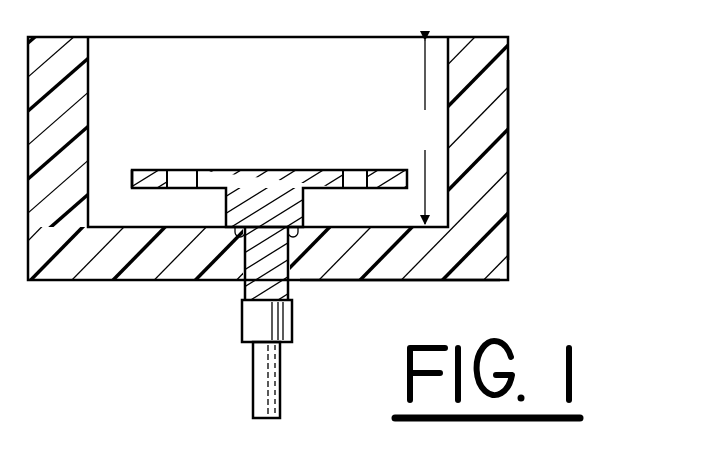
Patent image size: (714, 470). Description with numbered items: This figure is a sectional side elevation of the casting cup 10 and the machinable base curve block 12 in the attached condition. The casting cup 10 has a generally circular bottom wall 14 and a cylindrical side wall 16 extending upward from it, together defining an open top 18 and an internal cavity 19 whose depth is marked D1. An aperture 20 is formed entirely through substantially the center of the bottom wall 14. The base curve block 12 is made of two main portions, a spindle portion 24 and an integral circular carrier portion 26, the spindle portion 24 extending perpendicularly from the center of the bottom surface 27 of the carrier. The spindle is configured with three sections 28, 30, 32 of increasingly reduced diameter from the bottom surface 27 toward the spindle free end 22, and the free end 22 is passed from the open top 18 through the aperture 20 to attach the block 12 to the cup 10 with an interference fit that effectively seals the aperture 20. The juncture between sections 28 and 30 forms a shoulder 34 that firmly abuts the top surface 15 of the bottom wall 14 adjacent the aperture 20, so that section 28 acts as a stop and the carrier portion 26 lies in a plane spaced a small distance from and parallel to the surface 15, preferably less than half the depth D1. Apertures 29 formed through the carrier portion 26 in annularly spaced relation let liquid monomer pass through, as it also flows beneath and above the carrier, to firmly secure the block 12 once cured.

The casting cup 10 is at (498, 127).
The machinable base curve block 12 is at (252, 321).
The bottom wall 14 is at (388, 265).
The top surface of bottom wall 15 is at (349, 221).
The side wall 16 is at (495, 201).
The open top 18 is at (340, 72).
The internal cavity 19 is at (225, 72).
The aperture 20 is at (300, 265).
The free end of spindle 22 is at (266, 419).
The spindle portion 24 is at (293, 312).
The circular carrier portion 26 is at (385, 168).
The bottom surface of carrier portion 27 is at (143, 190).
The first spindle section 28 is at (222, 212).
The apertures in carrier 29 is at (188, 182).
The second spindle section 30 is at (240, 291).
The third spindle section 32 is at (256, 368).
The shoulder 34 is at (262, 245).
The depth of cup internal cavity D1 is at (431, 132).